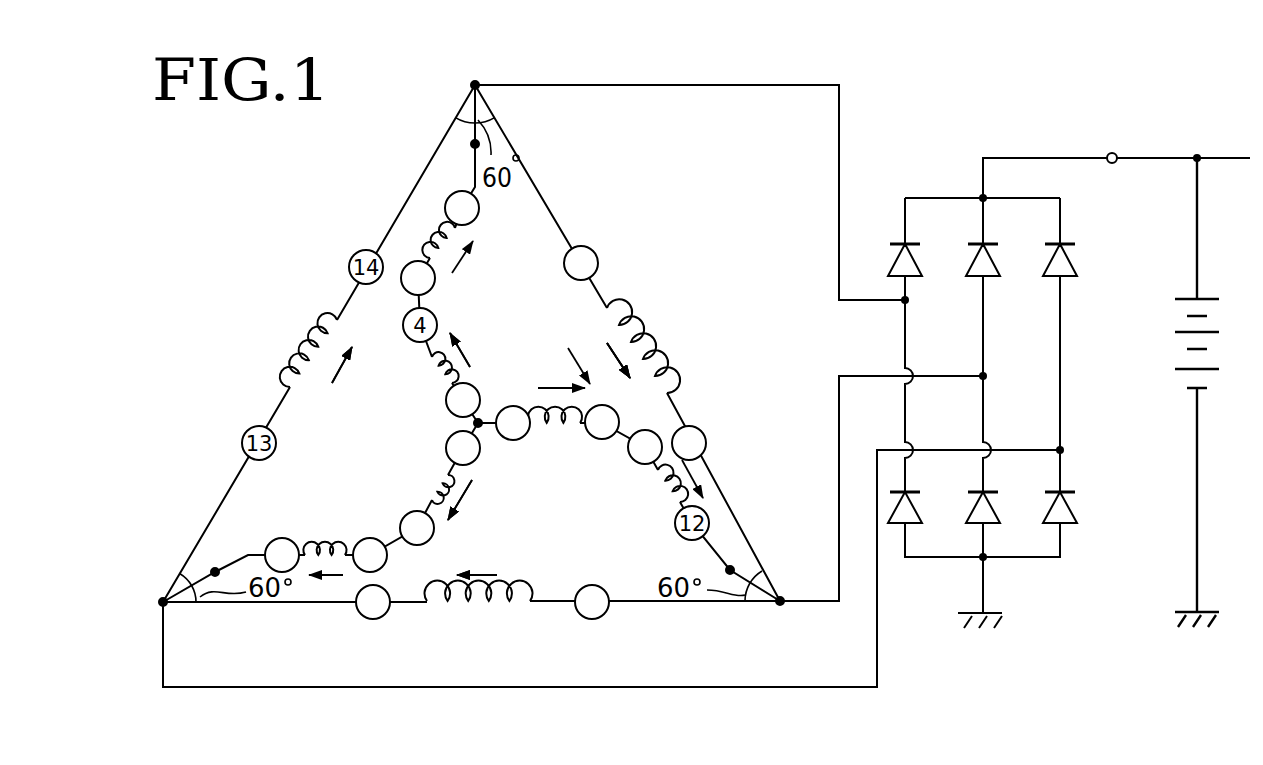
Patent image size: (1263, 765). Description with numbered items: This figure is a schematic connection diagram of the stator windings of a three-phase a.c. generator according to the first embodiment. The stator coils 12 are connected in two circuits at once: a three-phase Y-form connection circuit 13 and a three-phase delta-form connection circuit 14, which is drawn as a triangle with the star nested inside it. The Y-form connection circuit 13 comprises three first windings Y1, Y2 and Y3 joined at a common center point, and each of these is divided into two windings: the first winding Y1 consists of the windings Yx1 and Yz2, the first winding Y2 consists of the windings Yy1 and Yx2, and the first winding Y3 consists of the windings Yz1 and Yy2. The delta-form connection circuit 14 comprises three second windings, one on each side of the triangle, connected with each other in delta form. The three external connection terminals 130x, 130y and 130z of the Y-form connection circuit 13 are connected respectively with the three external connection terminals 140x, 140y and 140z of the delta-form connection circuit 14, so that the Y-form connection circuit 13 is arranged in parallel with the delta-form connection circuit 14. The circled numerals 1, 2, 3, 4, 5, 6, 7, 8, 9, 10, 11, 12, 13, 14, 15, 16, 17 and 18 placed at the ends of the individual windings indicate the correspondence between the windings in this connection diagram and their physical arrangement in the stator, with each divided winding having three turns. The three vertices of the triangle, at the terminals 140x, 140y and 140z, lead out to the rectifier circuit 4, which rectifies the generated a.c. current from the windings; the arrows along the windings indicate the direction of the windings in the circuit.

The three-phase a.c. generator 1 is at (581, 263).
The rotor 2 is at (689, 443).
The stator 3 is at (463, 400).
The rectifier circuit 4 is at (1069, 346).
The terminal 5 is at (418, 278).
The terminal 6 is at (462, 208).
The terminal 7 is at (592, 602).
The terminal 8 is at (373, 602).
The terminal 9 is at (513, 423).
The terminal 10 is at (602, 422).
The terminal 11 is at (645, 447).
The stator coils 12 is at (562, 187).
The three-phase Y-form connection circuit 13 is at (346, 470).
The three-phase delta-form connection circuit 14 is at (252, 391).
The terminal 15 is at (463, 448).
The terminal 16 is at (417, 528).
The terminal 17 is at (370, 555).
The terminal 18 is at (282, 555).
The external connection terminal 130x is at (475, 144).
The external connection terminal 130y is at (732, 568).
The external connection terminal 130z is at (215, 572).
The external connection terminal 140x is at (475, 85).
The external connection terminal 140y is at (782, 605).
The external connection terminal 140z is at (160, 604).
The first winding Y1 is at (421, 361).
The first winding Y2 is at (590, 384).
The first winding Y3 is at (445, 531).
The divided winding Yx1 is at (440, 375).
The divided winding Yx2 is at (665, 487).
The divided winding Yy1 is at (557, 433).
The divided winding Yy2 is at (325, 547).
The divided winding Yz1 is at (430, 483).
The divided winding Yz2 is at (455, 230).